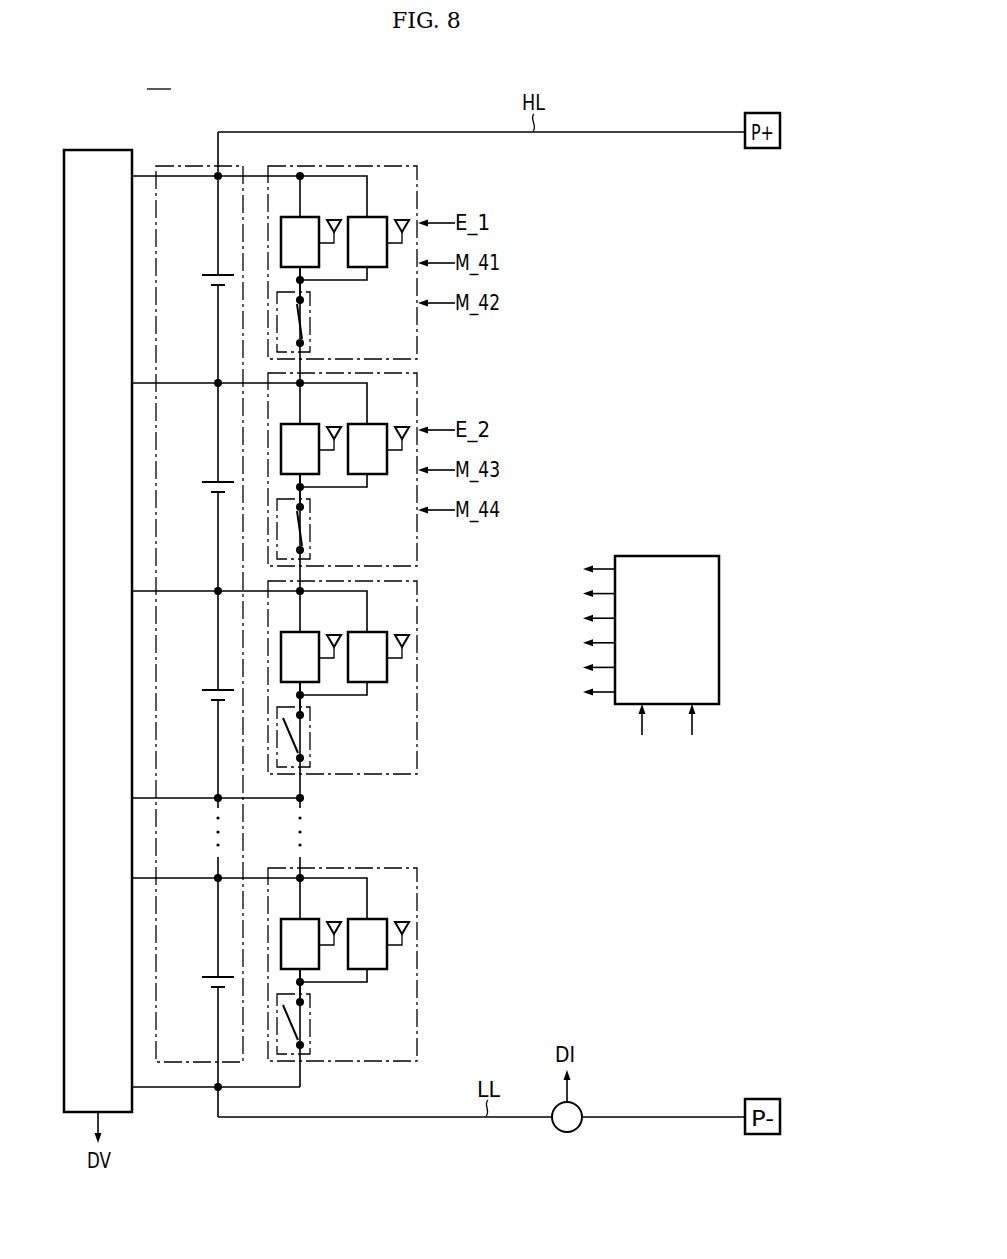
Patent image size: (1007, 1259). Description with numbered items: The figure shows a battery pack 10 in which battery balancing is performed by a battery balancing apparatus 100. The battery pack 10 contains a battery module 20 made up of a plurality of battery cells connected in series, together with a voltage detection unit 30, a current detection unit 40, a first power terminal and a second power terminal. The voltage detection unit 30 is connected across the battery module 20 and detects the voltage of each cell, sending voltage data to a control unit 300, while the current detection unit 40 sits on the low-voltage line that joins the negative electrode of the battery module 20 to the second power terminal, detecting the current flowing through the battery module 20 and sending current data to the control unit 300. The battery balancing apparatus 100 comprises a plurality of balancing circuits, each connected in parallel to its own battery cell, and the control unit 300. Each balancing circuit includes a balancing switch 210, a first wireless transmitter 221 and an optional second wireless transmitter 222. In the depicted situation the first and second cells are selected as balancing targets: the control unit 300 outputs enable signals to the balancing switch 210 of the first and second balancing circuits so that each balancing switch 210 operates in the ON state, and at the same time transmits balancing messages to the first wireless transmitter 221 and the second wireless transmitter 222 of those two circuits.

The battery pack 10 is at (159, 77).
The battery module 20 is at (172, 166).
The voltage detection unit 30 is at (97, 149).
The current detection unit 40 is at (567, 1134).
The battery balancing apparatus 100 is at (645, 465).
The balancing switch 210 is at (319, 673).
The first wireless transmitter 221 is at (311, 575).
The second wireless transmitter 222 is at (378, 575).
The control unit 300 is at (667, 555).